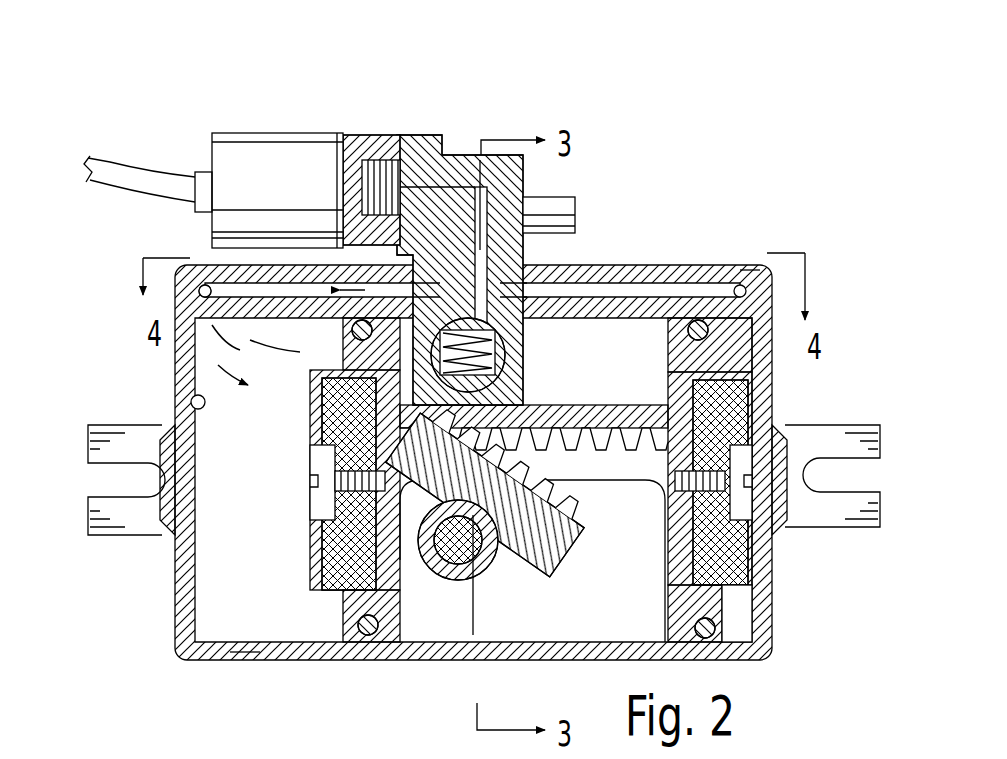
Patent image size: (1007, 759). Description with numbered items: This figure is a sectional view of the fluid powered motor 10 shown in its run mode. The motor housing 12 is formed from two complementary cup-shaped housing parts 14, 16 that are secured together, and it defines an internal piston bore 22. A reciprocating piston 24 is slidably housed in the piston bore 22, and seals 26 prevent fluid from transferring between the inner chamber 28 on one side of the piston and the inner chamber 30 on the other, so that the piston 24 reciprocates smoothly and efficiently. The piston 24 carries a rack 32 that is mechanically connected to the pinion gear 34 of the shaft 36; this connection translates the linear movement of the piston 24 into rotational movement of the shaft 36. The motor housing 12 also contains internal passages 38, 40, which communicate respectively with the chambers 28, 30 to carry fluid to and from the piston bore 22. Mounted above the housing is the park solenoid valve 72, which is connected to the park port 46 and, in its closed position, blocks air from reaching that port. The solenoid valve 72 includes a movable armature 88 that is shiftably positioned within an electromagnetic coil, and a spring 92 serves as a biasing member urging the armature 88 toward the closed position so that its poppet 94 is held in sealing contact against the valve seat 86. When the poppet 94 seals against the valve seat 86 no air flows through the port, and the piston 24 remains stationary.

The fluid powered motor 10 is at (672, 160).
The motor housing 12 is at (703, 262).
The housing part 14 is at (238, 665).
The housing part 16 is at (752, 268).
The piston bore 22 is at (192, 400).
The reciprocating piston 24 is at (400, 600).
The seals 26 is at (364, 645).
The inner chamber 28 is at (235, 572).
The inner chamber 30 is at (742, 622).
The rack 32 is at (597, 410).
The pinion gear 34 is at (548, 540).
The shaft 36 is at (475, 556).
The internal passage 38 is at (205, 290).
The internal passage 40 is at (745, 292).
The park port 46 is at (482, 176).
The park solenoid valve 72 is at (253, 152).
The valve seat 86 is at (410, 178).
The armature 88 is at (345, 185).
The spring 92 is at (375, 185).
The poppet 94 is at (396, 160).